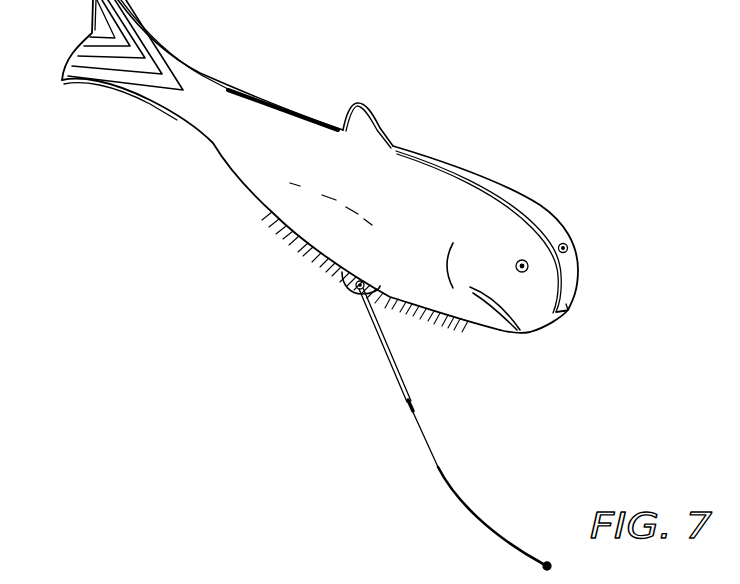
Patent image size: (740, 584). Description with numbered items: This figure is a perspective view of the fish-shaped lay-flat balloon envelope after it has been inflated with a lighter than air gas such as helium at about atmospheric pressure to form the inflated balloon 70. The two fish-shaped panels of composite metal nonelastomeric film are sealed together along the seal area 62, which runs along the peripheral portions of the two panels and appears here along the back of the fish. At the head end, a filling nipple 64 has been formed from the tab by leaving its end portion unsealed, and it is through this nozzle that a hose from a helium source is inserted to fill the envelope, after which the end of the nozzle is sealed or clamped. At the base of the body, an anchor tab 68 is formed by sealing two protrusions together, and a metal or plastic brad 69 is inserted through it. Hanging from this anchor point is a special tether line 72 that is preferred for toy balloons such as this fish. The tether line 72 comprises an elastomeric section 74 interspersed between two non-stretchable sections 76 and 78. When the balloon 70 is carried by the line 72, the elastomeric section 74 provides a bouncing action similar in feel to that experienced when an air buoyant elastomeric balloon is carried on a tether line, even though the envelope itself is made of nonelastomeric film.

The seal area 62 is at (267, 101).
The filling nipple 64 is at (567, 313).
The anchor tab 68 is at (378, 298).
The brad 69 is at (343, 281).
The inflated balloon 70 is at (553, 189).
The tether line 72 is at (405, 402).
The elastomeric section 74 is at (430, 448).
The non-stretchable section 76 is at (400, 383).
The non-stretchable section 78 is at (503, 542).